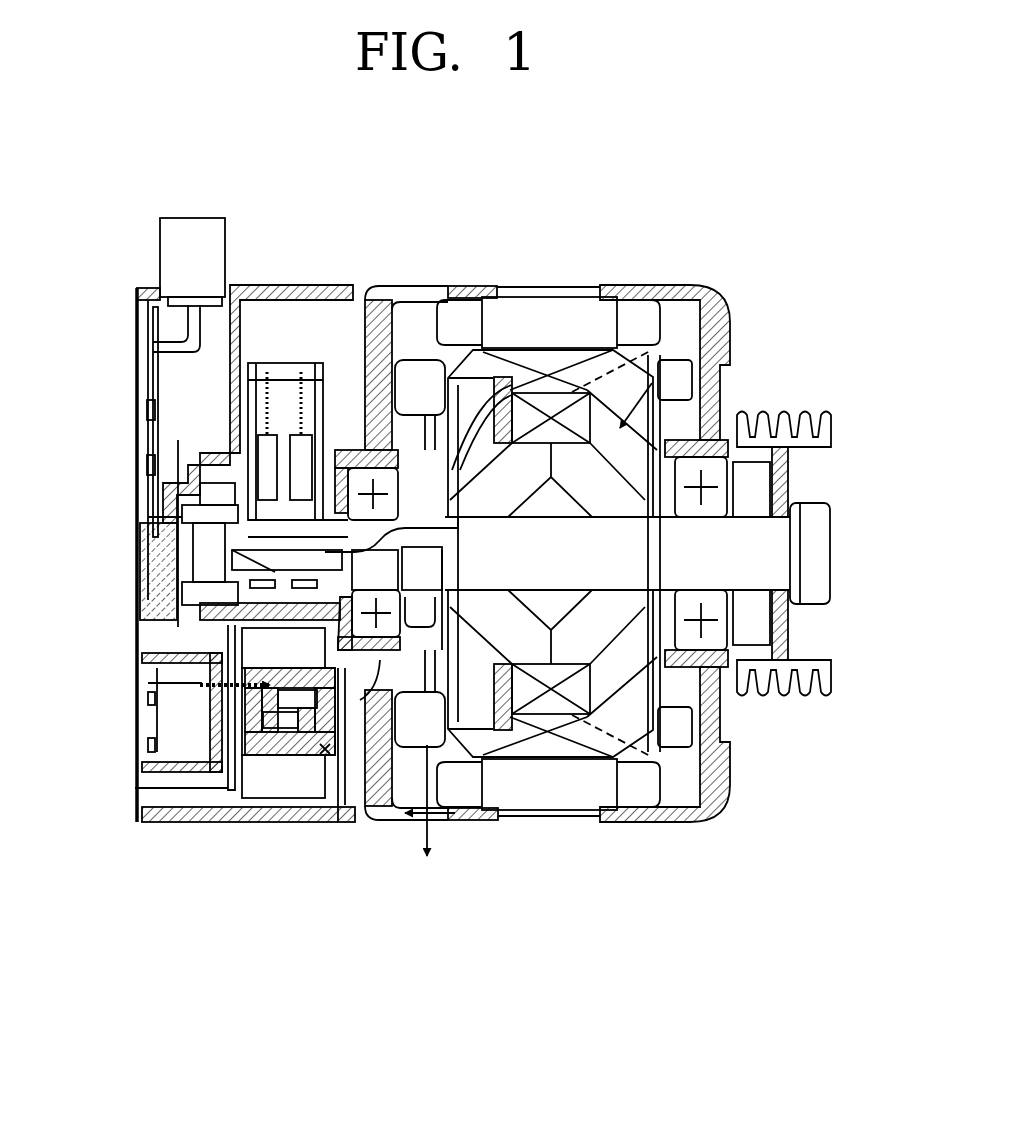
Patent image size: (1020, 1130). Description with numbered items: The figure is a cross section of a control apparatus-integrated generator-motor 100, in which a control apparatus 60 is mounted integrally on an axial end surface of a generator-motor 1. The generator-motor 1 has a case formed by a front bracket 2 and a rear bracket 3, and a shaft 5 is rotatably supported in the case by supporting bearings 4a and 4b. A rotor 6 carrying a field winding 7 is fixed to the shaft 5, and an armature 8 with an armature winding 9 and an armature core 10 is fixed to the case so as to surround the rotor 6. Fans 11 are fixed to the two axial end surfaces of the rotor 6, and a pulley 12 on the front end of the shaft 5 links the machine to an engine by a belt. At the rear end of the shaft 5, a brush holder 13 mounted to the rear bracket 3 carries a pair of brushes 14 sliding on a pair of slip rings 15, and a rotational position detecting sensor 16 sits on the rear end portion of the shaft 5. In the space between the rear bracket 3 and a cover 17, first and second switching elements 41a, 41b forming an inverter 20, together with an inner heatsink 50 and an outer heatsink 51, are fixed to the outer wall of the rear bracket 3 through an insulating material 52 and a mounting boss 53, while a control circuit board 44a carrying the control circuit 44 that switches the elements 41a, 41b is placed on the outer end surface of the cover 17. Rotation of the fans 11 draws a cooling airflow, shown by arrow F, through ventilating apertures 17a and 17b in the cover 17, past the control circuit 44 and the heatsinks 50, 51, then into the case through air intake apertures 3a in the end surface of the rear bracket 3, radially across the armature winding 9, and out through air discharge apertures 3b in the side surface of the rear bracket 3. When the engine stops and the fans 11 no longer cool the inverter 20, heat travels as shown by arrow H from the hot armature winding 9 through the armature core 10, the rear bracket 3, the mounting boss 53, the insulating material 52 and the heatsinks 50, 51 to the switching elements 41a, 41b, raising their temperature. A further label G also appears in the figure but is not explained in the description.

The control apparatus-integrated generator-motor 100 is at (182, 163).
The control apparatus 60 is at (137, 306).
The generator-motor 1 is at (706, 281).
The front bracket 2 is at (733, 294).
The rear bracket 3 is at (380, 288).
The air intake apertures 3a is at (450, 822).
The air discharge apertures 3b is at (452, 826).
The supporting bearing 4a is at (730, 690).
The supporting bearing 4b is at (345, 452).
The shaft 5 is at (765, 550).
The rotor 6 is at (655, 400).
The field winding 7 is at (605, 372).
The armature 8 is at (590, 825).
The armature winding 9 is at (638, 795).
The armature core 10 is at (560, 800).
The fans 11 is at (690, 750).
The pulley 12 is at (820, 412).
The brush holder 13 is at (285, 363).
The brushes 14 is at (235, 433).
The slip rings 15 is at (185, 565).
The rotational position detecting sensor 16 is at (140, 585).
The cover 17 is at (230, 392).
The ventilating aperture 17a is at (157, 652).
The ventilating aperture 17b is at (140, 782).
The inverter 20 is at (322, 792).
The first switching elements 41a is at (325, 752).
The second switching elements 41b is at (282, 728).
The control circuit 44 is at (147, 410).
The control circuit board 44a is at (145, 466).
The inner heatsink 50 is at (328, 665).
The outer heatsink 51 is at (290, 735).
The insulating material 52 is at (370, 770).
The mounting boss 53 is at (396, 770).
The cooling airflow arrow F is at (202, 637).
The gap G is at (182, 701).
The heat transfer arrow H is at (518, 820).